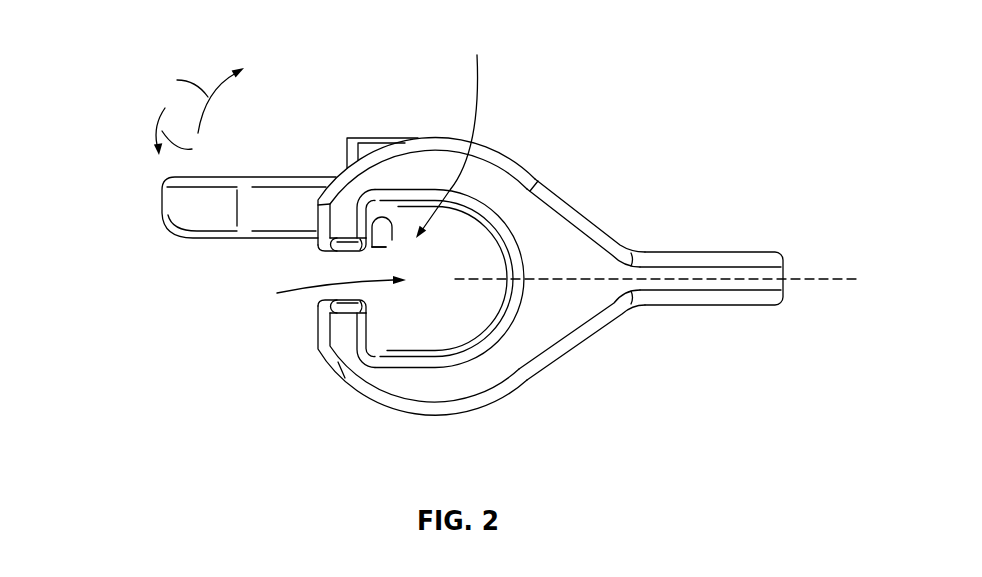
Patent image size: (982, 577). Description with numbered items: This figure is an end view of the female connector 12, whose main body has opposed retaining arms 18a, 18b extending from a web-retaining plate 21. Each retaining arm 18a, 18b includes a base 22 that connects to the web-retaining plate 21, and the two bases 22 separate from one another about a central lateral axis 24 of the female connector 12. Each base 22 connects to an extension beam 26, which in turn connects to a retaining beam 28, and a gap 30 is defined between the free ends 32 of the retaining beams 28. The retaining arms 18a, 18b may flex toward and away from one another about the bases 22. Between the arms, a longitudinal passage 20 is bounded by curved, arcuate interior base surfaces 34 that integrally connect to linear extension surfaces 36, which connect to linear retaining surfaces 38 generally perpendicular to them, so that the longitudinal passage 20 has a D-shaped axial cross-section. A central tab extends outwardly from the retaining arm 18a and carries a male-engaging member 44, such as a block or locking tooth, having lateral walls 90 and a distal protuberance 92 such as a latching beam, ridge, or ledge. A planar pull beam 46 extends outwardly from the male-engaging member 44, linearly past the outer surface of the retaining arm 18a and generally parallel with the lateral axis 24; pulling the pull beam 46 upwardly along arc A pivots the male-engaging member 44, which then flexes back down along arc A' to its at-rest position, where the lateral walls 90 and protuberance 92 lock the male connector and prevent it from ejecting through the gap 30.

The female connector 12 is at (109, 136).
The pull beam 46 is at (222, 177).
The male-engaging member 44 is at (452, 135).
The lateral walls 90 is at (396, 222).
The extension beam 26 is at (443, 167).
The retaining arm 18a is at (508, 198).
The retaining arm 18b is at (475, 393).
The base 22 is at (567, 243).
The web-retaining plate 21 is at (697, 252).
The retaining beam 28 is at (322, 247).
The free ends 32 is at (350, 253).
The longitudinal passage 20 is at (325, 292).
The gap 30 is at (332, 292).
The linear extension surfaces 36 is at (448, 206).
The linear retaining surfaces 38 is at (394, 239).
The interior base surfaces 34 is at (498, 240).
The protuberance 92 is at (380, 248).
The central lateral axis 24 is at (502, 280).